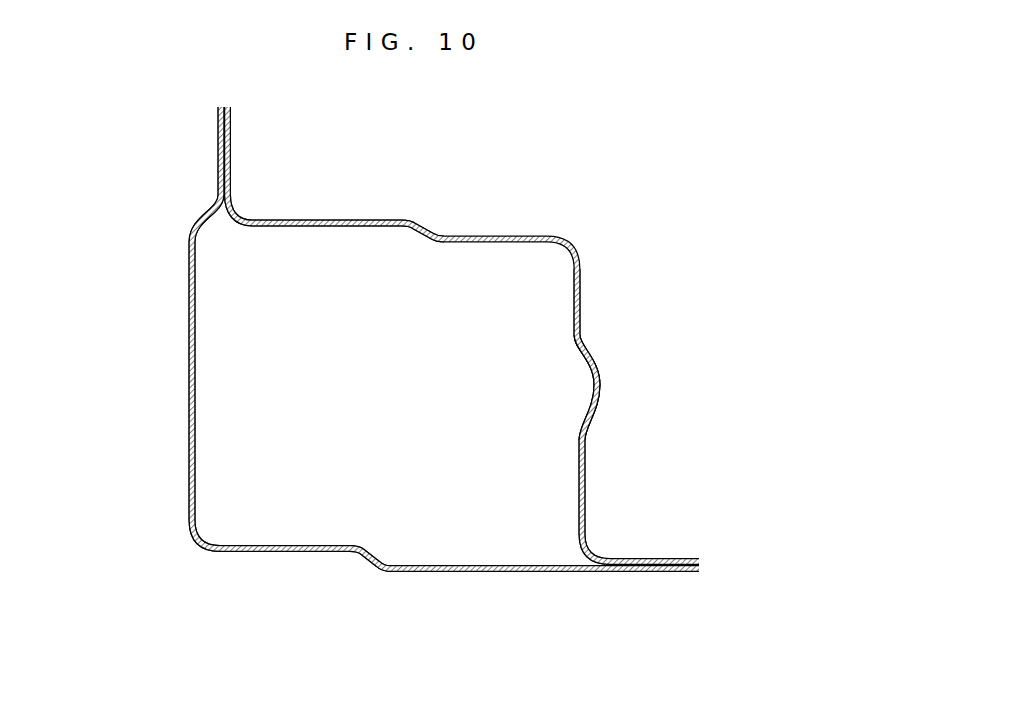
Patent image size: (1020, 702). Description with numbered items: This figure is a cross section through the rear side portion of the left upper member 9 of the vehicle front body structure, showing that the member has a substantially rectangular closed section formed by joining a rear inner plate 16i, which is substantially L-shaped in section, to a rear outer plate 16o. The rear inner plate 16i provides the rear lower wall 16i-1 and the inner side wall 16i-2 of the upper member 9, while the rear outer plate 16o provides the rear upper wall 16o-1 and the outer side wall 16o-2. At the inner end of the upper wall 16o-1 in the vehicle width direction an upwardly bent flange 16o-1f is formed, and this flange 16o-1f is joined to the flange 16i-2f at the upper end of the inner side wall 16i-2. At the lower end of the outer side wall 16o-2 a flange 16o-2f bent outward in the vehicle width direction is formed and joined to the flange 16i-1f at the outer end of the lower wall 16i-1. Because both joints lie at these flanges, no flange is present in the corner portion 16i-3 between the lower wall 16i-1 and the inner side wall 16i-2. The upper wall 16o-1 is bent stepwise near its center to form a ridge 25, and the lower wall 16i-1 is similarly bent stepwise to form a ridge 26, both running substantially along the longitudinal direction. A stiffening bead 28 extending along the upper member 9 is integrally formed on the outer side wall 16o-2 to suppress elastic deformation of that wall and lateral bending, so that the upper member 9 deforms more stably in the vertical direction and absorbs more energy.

The upper member 9 is at (551, 176).
The rear outer plate 16o is at (580, 283).
The rear inner plate 16i is at (188, 352).
The rear upper wall 16o-1 is at (372, 218).
The flange 16o-1f is at (233, 140).
The outer side wall 16o-2 is at (587, 347).
The flange 16o-2f is at (652, 558).
The ridge 25 is at (425, 231).
The stiffening bead 28 is at (601, 395).
The rear lower wall 16i-1 is at (315, 552).
The flange 16i-1f is at (656, 572).
The inner side wall 16i-2 is at (188, 433).
The flange 16i-2f is at (214, 163).
The corner portion 16i-3 is at (201, 545).
The ridge 26 is at (372, 564).